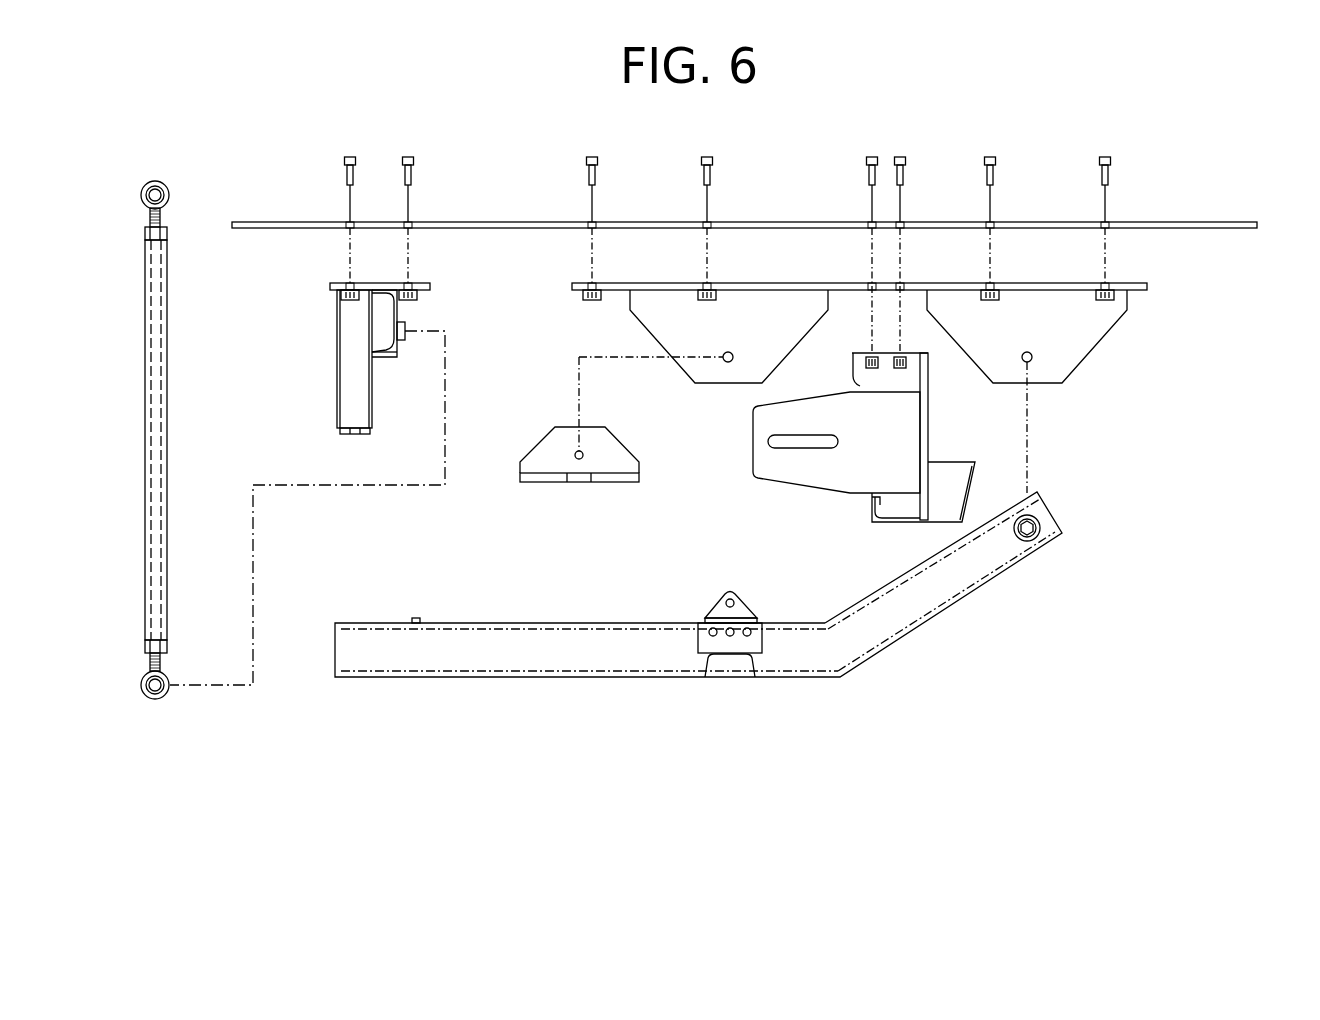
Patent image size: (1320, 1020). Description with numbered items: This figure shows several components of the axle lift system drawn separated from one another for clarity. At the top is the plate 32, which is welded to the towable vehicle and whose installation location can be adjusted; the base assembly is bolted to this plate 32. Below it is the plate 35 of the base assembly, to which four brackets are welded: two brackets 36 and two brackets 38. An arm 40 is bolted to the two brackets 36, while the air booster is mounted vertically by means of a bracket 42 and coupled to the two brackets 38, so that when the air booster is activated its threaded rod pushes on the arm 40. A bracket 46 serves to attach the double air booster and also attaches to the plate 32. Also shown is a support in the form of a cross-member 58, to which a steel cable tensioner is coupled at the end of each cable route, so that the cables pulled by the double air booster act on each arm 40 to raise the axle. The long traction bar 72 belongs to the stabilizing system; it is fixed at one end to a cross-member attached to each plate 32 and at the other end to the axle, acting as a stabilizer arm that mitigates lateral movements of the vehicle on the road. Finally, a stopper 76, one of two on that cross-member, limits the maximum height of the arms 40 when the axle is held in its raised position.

The plate 32 is at (1205, 229).
The plate 35 is at (1140, 291).
The bracket 36 is at (1088, 335).
The bracket 38 is at (662, 329).
The arm 40 is at (907, 613).
The bracket 42 is at (615, 441).
The bracket 46 is at (905, 428).
The cross-member 58 is at (880, 498).
The traction bar 72 is at (168, 403).
The stopper 76 is at (345, 402).